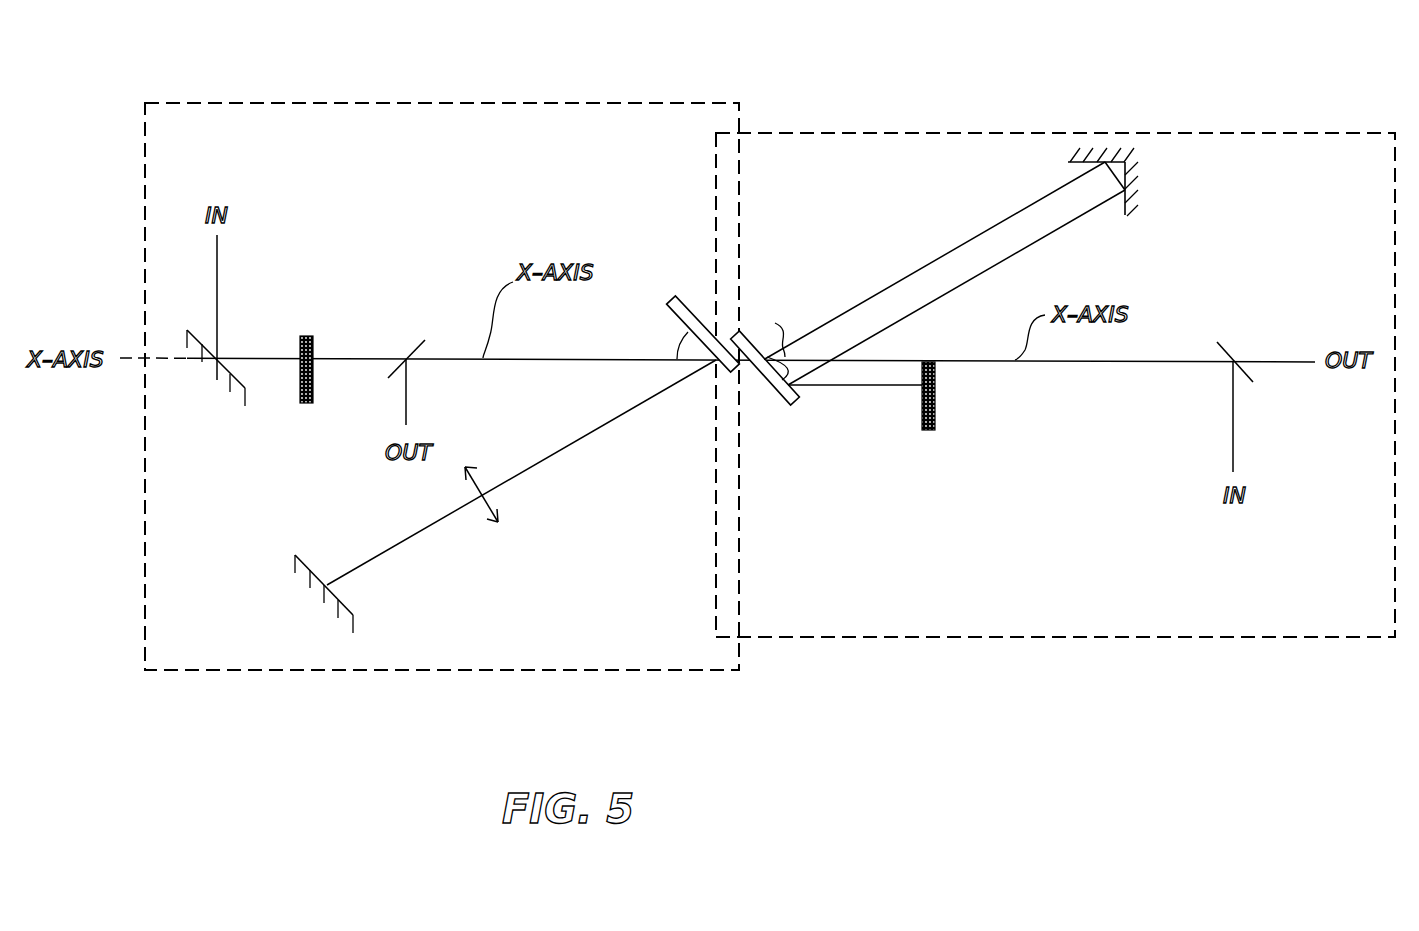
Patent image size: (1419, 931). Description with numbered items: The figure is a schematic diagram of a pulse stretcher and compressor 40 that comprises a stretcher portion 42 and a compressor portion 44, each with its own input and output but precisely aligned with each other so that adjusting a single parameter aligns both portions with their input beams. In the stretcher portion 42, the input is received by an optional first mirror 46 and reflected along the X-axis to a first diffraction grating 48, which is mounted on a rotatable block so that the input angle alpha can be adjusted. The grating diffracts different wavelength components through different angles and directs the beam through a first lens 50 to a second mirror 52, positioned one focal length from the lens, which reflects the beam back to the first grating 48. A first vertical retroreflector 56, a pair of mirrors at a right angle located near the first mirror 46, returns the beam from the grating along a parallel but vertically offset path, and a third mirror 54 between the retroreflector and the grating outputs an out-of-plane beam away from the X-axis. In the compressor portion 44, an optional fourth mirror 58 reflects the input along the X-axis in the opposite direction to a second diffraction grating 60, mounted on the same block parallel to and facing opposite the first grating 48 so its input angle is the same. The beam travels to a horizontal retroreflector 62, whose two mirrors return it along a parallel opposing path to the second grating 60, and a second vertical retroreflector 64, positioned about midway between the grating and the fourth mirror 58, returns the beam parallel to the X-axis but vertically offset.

The stretcher and compressor 40 is at (988, 63).
The stretcher portion 42 is at (520, 670).
The compressor portion 44 is at (830, 637).
The first mirror 46 is at (190, 330).
The first diffraction grating 48 is at (670, 312).
The first lens 50 is at (490, 498).
The second mirror 52 is at (345, 603).
The third mirror 54 is at (408, 346).
The first vertical retroreflector 56 is at (313, 340).
The fourth mirror 58 is at (1250, 372).
The second diffraction grating 60 is at (800, 400).
The horizontal retroreflector 62 is at (1128, 196).
The second vertical retroreflector 64 is at (935, 402).